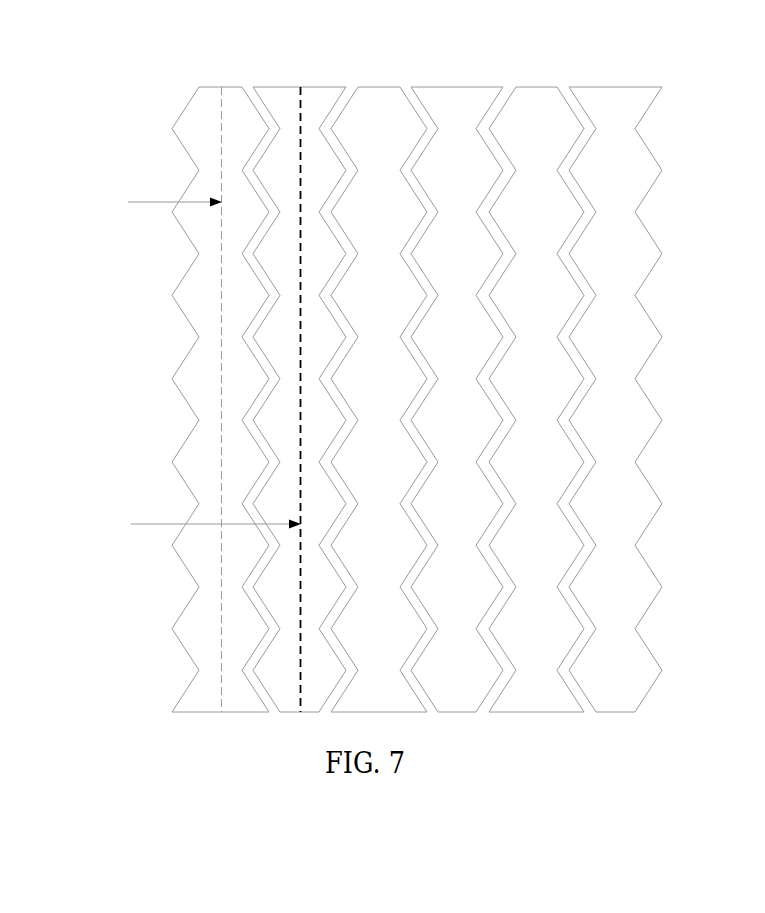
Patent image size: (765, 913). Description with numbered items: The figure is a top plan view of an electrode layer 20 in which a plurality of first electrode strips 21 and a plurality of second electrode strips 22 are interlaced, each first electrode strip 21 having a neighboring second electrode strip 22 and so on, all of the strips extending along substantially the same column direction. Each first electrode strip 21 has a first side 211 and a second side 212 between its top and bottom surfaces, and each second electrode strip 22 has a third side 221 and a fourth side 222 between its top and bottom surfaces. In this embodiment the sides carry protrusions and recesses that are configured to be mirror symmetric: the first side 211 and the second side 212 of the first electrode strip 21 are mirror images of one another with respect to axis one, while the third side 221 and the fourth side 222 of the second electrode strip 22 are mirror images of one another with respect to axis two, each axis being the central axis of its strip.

The electrode layer 20 is at (230, 21).
The first electrode strip 21 is at (236, 103).
The second electrode strip 22 is at (292, 100).
The first side 211 is at (187, 435).
The second side 212 is at (255, 478).
The third side 221 is at (264, 274).
The fourth side 222 is at (338, 329).